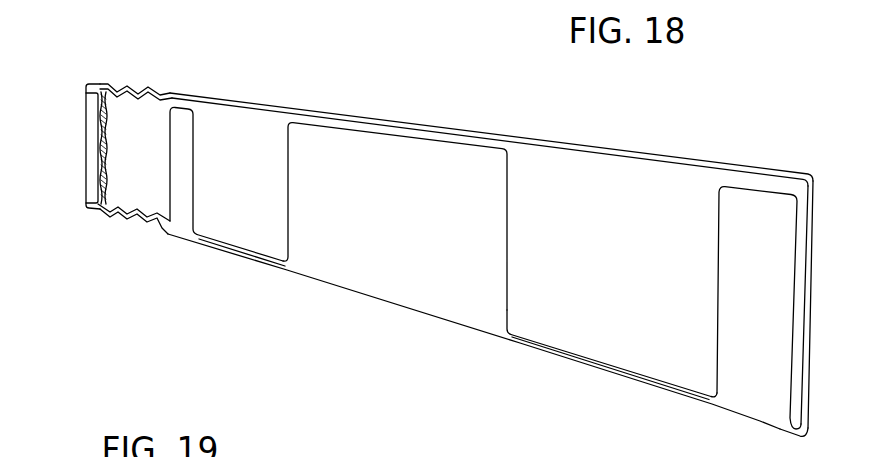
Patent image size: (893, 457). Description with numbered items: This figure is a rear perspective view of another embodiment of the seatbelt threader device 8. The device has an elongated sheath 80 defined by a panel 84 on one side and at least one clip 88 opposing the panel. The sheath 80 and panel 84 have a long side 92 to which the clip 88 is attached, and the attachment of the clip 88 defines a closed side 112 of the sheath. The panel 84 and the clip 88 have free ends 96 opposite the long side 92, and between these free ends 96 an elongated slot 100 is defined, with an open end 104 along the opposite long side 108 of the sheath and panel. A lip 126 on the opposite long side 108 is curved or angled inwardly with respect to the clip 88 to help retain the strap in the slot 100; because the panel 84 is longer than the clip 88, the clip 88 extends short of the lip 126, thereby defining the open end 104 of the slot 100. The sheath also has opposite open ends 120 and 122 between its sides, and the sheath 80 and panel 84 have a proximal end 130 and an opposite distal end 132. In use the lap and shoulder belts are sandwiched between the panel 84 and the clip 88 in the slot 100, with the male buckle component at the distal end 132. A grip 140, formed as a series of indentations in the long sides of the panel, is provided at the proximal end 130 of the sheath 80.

The seatbelt threader device 8 is at (745, 136).
The elongated sheath 80 is at (248, 108).
The panel 84 is at (565, 338).
The clip 88 is at (352, 263).
The long side 92 is at (234, 254).
The free ends 96 is at (459, 127).
The elongated slot 100 is at (510, 342).
The open end 104 is at (355, 118).
The opposite long side 108 is at (211, 97).
The closed side 112 is at (376, 300).
The open end 120 is at (85, 148).
The open end 122 is at (812, 304).
The lip 126 is at (816, 181).
The proximal end 130 is at (113, 80).
The distal end 132 is at (747, 420).
The grip 140 is at (143, 88).